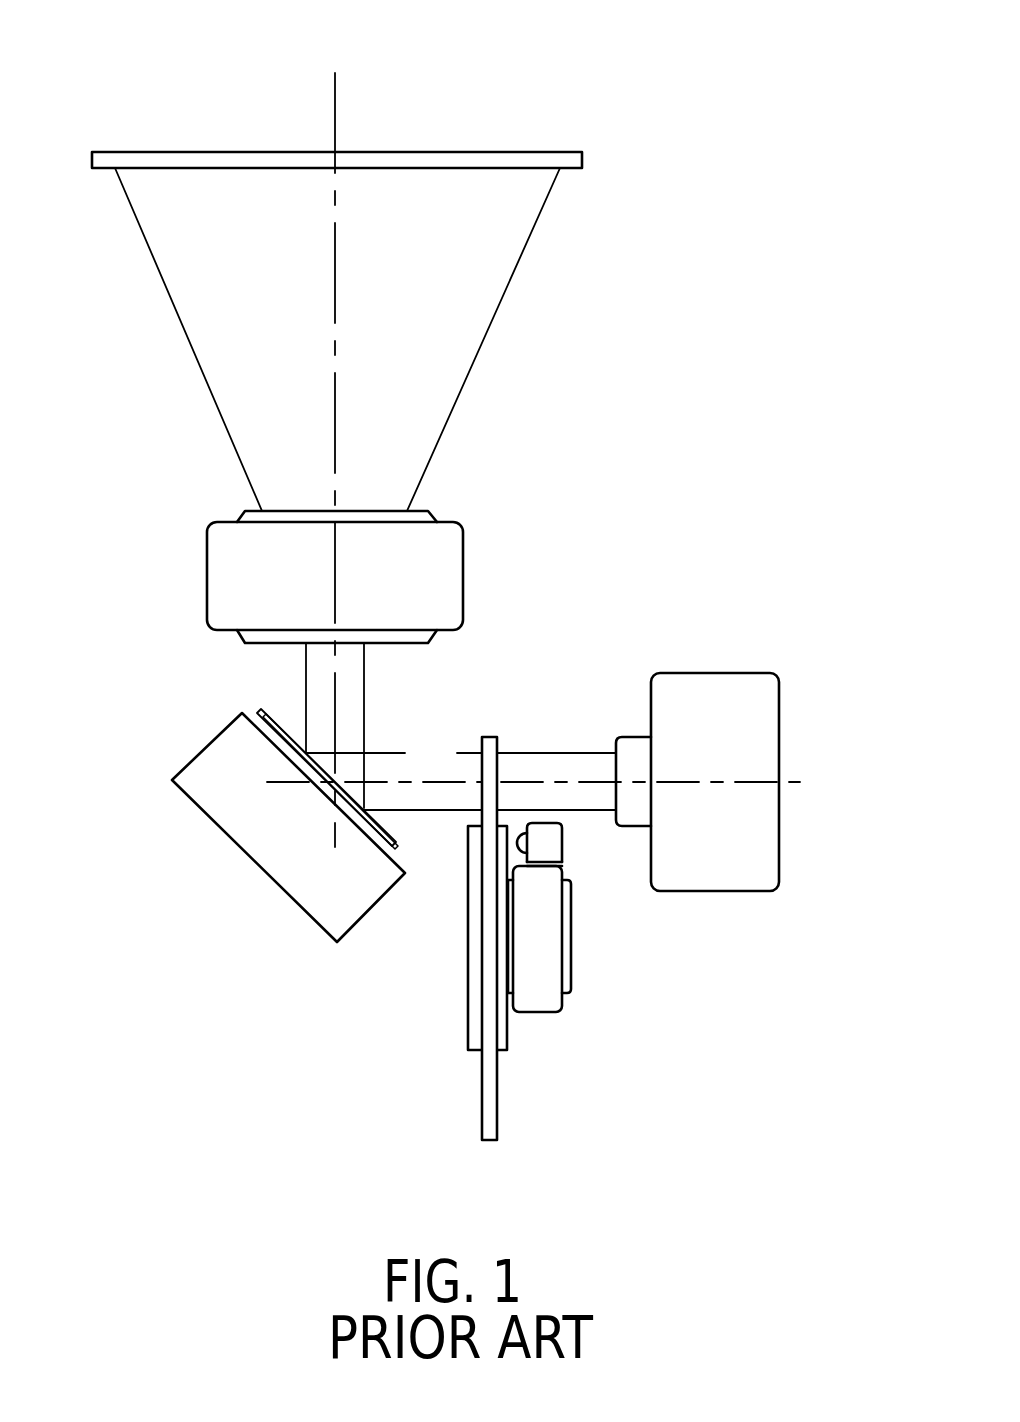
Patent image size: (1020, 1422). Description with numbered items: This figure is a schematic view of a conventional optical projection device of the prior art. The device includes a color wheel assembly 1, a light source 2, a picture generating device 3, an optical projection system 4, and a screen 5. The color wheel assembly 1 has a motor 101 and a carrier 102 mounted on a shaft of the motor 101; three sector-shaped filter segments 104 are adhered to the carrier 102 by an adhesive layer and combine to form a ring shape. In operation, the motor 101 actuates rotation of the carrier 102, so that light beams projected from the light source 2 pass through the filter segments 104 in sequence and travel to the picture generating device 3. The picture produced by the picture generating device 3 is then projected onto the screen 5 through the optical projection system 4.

The color wheel assembly 1 is at (565, 996).
The motor 101 is at (547, 945).
The carrier 102 is at (478, 975).
The filter segments 104 is at (488, 1103).
The light source 2 is at (723, 893).
The picture generating device 3 is at (279, 890).
The optical projection system 4 is at (467, 549).
The screen 5 is at (517, 150).